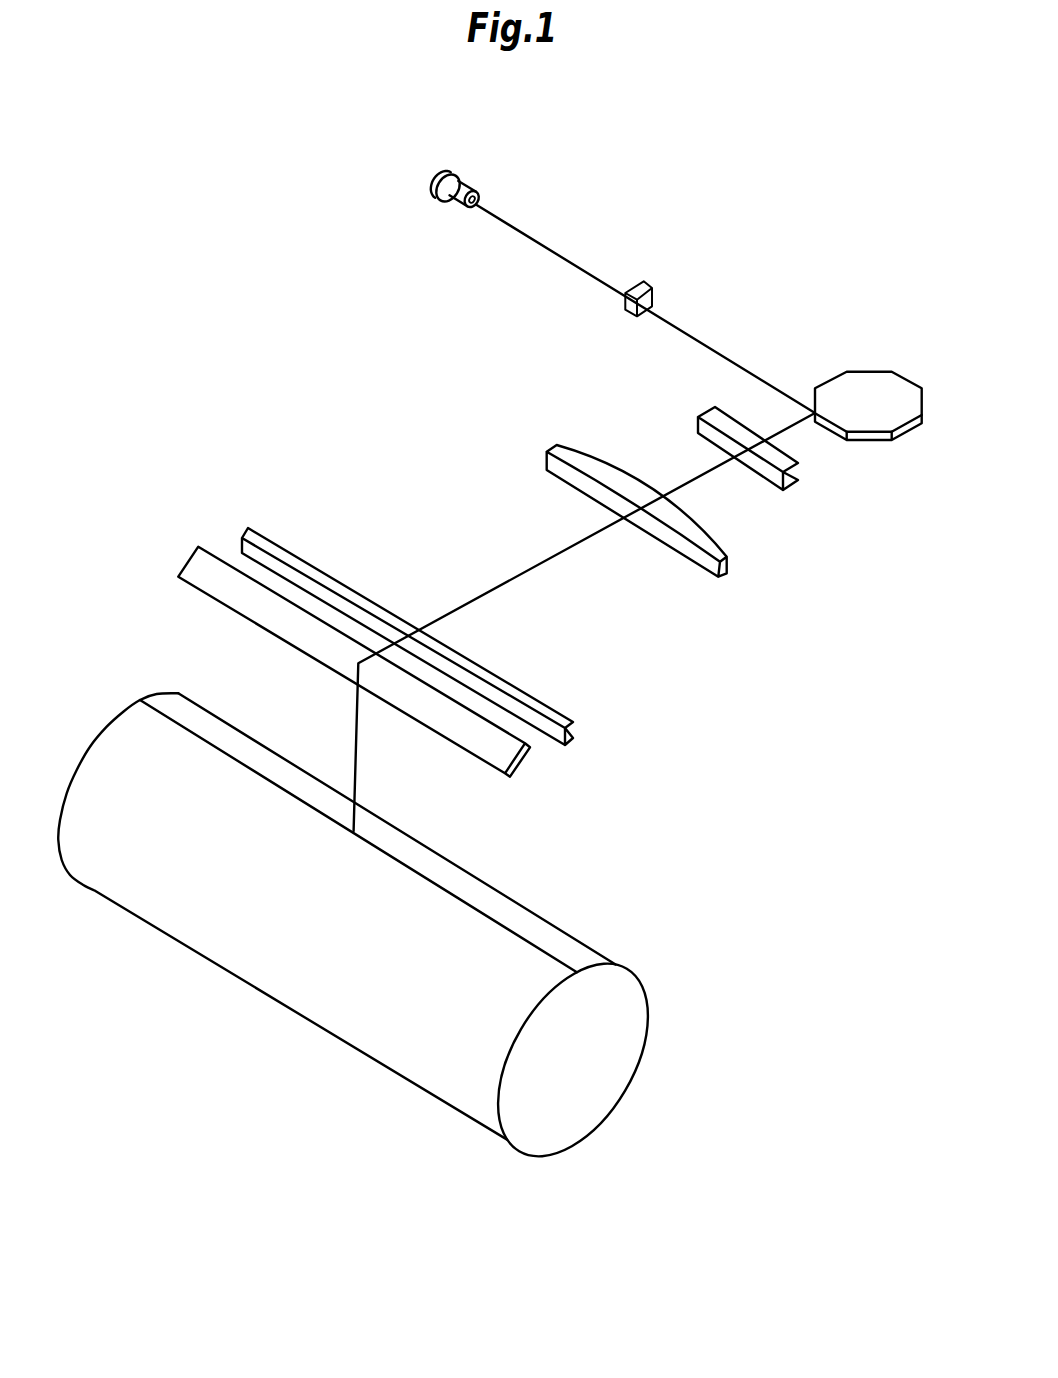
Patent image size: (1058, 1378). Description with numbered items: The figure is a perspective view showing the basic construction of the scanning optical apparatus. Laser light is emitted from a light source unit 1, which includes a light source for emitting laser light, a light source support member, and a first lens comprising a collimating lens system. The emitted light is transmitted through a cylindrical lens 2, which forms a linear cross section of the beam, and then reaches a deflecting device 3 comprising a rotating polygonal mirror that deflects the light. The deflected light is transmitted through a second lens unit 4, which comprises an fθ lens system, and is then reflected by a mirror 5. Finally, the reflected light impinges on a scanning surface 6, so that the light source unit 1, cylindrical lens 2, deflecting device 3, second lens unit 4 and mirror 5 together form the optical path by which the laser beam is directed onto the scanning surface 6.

The light source unit 1 is at (466, 170).
The cylindrical lens 2 is at (650, 285).
The deflecting device 3 is at (870, 388).
The second lens unit 4 is at (943, 548).
The mirror 5 is at (518, 758).
The scanning surface 6 is at (563, 940).